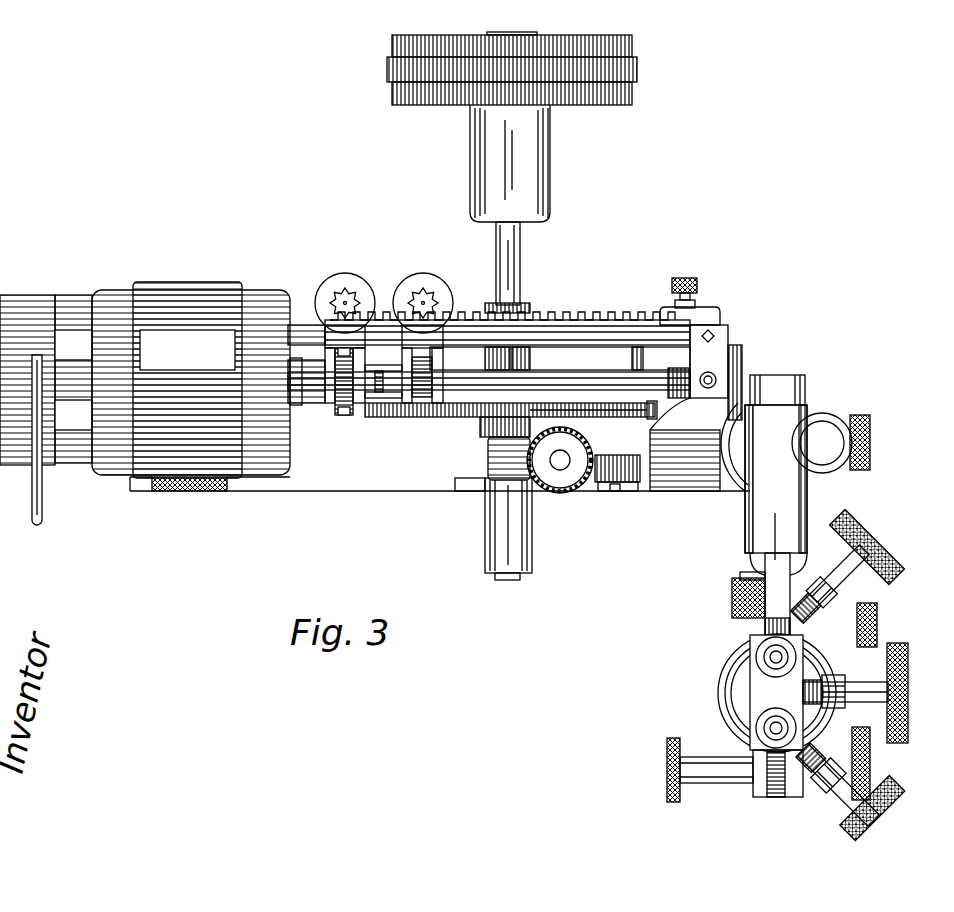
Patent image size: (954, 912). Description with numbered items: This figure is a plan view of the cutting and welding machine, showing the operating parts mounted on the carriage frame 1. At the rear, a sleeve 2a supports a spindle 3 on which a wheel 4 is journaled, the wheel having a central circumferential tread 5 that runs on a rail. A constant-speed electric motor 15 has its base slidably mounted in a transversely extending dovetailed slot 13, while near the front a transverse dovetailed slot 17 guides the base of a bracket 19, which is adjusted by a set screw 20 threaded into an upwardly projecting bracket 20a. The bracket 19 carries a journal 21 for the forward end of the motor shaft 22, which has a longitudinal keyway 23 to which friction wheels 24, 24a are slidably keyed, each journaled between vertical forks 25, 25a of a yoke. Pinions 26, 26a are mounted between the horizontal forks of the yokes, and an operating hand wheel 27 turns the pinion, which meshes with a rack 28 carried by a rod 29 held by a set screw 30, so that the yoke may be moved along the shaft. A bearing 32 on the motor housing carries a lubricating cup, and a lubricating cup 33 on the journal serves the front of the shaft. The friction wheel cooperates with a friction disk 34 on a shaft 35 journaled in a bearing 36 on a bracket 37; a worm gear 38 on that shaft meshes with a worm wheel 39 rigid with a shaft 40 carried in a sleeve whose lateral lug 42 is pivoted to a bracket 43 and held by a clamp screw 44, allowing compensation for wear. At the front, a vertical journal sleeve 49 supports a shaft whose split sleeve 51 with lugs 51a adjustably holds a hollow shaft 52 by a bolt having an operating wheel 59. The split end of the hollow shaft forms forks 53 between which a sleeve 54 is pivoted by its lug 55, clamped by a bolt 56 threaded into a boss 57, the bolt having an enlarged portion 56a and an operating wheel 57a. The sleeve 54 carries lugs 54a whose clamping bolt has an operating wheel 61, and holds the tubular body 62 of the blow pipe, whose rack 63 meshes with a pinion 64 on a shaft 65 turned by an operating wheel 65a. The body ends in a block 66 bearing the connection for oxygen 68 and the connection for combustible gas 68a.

The carriage frame 1 is at (310, 495).
The sleeve 2a is at (532, 312).
The spindle 3 is at (522, 248).
The wheel 4 is at (592, 104).
The central circumferential tread 5 is at (638, 70).
The transversely extending dovetailed slot 13 is at (190, 492).
The constant-speed electric motor 15 is at (145, 403).
The transverse dovetailed slot 17 is at (700, 496).
The bracket 19 is at (668, 352).
The set screw 20 is at (693, 287).
The upwardly projecting bracket 20a is at (712, 313).
The journal 21 is at (688, 378).
The motor shaft 22 is at (650, 413).
The longitudinal keyway 23 is at (540, 380).
The friction wheel 24 is at (420, 416).
The friction wheel 24a is at (343, 418).
The vertical forks 25 is at (395, 414).
The vertical forks 25a is at (337, 400).
The pinion 26 is at (430, 292).
The pinion 26a is at (340, 291).
The operating hand wheel 27 is at (362, 285).
The rack 28 is at (612, 318).
The rod 29 is at (566, 333).
The set screw 30 is at (716, 336).
The bearing 32 is at (291, 355).
The lubricating cup 33 is at (716, 378).
The friction disk 34 is at (470, 417).
The shaft 35 is at (506, 580).
The bearing 36 is at (487, 522).
The bracket 37 is at (470, 494).
The worm gear 38 is at (490, 456).
The worm wheel 39 is at (570, 490).
The shaft 40 is at (562, 460).
The lateral lug 42 is at (643, 472).
The bracket 43 is at (630, 484).
The clamp screw 44 is at (620, 494).
The vertical journal sleeve 49 is at (735, 482).
The split sleeve 51 is at (776, 490).
The lugs 51a is at (852, 420).
The hollow shaft 52 is at (785, 382).
The forks 53 is at (792, 560).
The sleeve 54 is at (738, 655).
The lugs 54a is at (765, 800).
The lug 55 is at (768, 620).
The bolt 56 is at (735, 600).
The enlarged portion 56a is at (805, 590).
The boss 57 is at (742, 580).
The operating wheel 57a is at (880, 556).
The operating wheel 59 is at (822, 443).
The operating wheel 61 is at (668, 765).
The tubular body 62 is at (728, 680).
The rack 63 is at (750, 760).
The pinion 64 is at (778, 798).
The shaft 65 is at (760, 784).
The operating wheel 65a is at (872, 776).
The block 66 is at (735, 690).
The connection for oxygen 68 is at (787, 667).
The connection for combustible gas 68a is at (767, 727).